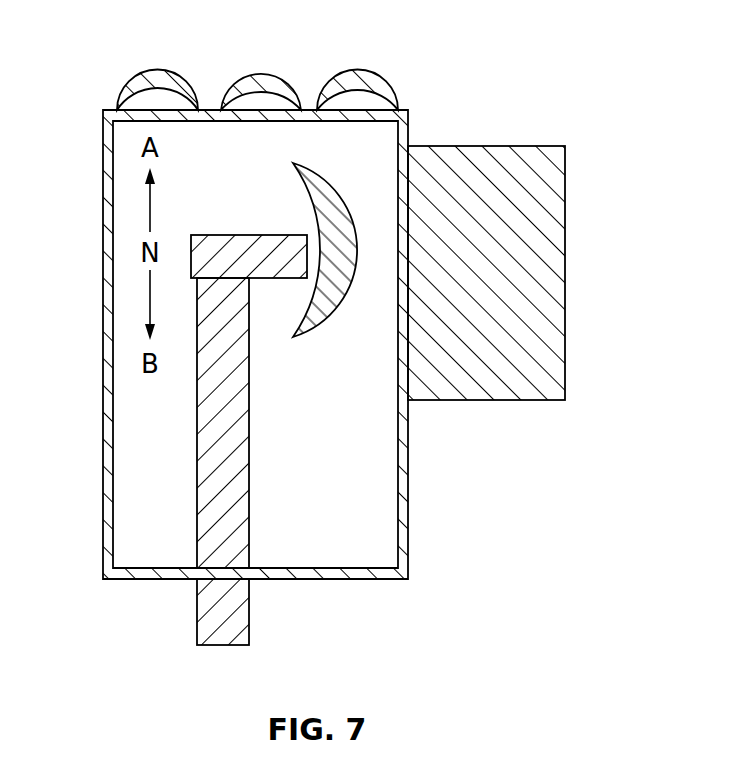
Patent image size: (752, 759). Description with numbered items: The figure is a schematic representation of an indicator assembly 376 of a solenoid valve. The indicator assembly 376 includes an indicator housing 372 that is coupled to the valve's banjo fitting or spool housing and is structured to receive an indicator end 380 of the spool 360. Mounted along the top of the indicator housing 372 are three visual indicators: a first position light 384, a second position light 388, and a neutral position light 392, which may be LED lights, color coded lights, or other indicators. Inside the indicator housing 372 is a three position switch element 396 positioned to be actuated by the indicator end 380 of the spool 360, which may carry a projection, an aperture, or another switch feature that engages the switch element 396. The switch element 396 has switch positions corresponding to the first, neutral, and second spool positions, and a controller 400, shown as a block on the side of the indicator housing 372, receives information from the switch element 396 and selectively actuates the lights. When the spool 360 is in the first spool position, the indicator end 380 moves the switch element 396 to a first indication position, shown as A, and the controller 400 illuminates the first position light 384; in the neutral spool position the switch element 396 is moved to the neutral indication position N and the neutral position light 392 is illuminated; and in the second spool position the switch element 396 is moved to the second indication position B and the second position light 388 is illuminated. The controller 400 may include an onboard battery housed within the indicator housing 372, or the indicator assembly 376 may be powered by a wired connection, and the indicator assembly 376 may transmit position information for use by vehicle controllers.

The spool 360 is at (242, 623).
The indicator housing 372 is at (407, 503).
The indicator assembly 376 is at (623, 260).
The indicator end 380 is at (205, 450).
The first position light 384 is at (366, 82).
The second position light 388 is at (263, 82).
The neutral position light 392 is at (168, 82).
The switch element 396 is at (325, 300).
The controller 400 is at (553, 350).